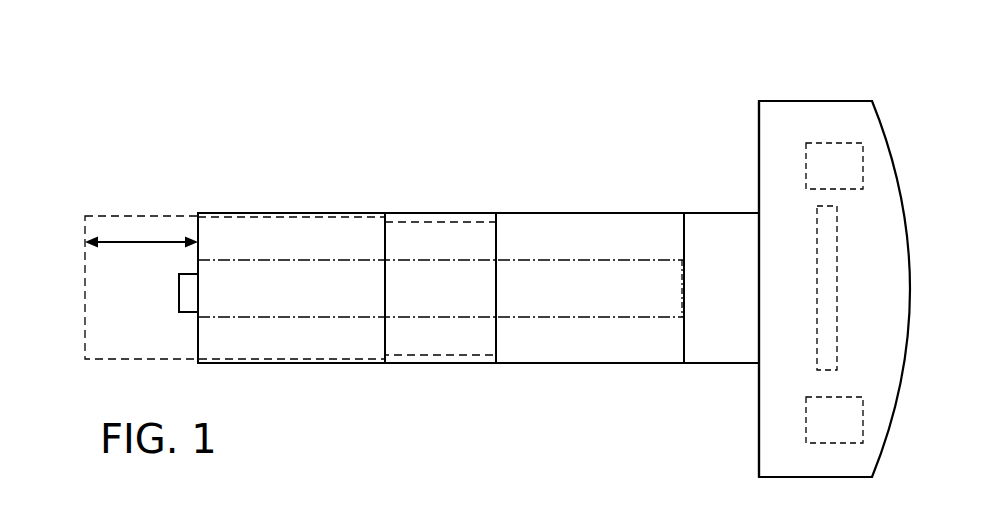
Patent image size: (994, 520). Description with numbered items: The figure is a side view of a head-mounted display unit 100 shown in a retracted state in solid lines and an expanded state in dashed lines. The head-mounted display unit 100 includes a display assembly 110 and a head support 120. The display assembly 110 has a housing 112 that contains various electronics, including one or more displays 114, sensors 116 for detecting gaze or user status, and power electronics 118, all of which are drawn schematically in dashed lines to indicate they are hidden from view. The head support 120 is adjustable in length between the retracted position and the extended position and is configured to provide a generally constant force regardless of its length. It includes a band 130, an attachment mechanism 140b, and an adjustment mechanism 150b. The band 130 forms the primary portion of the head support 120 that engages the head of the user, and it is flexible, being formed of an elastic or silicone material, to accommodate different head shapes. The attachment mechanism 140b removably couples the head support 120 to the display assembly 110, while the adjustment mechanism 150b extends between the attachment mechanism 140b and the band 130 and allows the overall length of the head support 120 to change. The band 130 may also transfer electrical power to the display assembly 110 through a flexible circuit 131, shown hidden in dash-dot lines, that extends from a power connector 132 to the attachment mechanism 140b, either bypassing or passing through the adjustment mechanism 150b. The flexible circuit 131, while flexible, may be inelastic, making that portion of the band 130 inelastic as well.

The head-mounted display unit 100 is at (204, 114).
The display assembly 110 is at (833, 56).
The housing 112 is at (759, 148).
The displays 114 is at (818, 277).
The sensors 116 is at (817, 179).
The power electronics 118 is at (817, 432).
The head support 120 is at (478, 168).
The band 130 is at (371, 363).
The flexible circuit 131 is at (257, 317).
The power connector 132 is at (179, 290).
The adjustment mechanism 150b is at (573, 363).
The attachment mechanism 140b is at (723, 363).